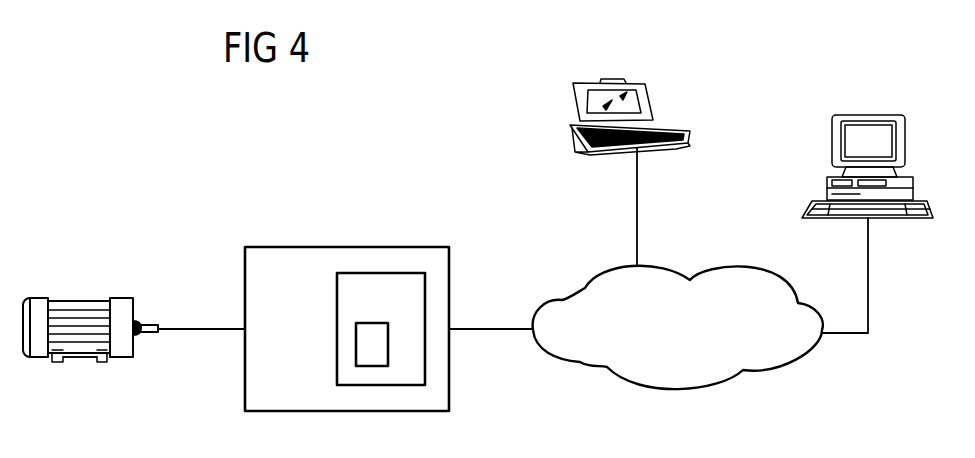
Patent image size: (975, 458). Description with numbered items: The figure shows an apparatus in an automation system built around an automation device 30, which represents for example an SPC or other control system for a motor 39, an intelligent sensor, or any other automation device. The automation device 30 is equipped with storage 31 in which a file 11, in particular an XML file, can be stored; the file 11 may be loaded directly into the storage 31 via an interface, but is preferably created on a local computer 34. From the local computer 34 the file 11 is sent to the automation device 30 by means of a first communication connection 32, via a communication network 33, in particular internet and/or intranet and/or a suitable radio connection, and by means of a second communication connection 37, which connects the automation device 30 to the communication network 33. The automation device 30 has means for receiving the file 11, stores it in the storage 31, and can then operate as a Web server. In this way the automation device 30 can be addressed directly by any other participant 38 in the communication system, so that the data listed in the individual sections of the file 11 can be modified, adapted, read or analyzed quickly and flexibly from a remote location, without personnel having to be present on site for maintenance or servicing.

The XML file 11 is at (356, 345).
The automation device 30 is at (311, 247).
The storage 31 is at (379, 273).
The first communication connection 32 is at (849, 335).
The communication network 33 is at (675, 388).
The local computer 34 is at (832, 141).
The second communication connection 37 is at (490, 331).
The other participant 38 is at (577, 110).
The motor 39 is at (118, 300).